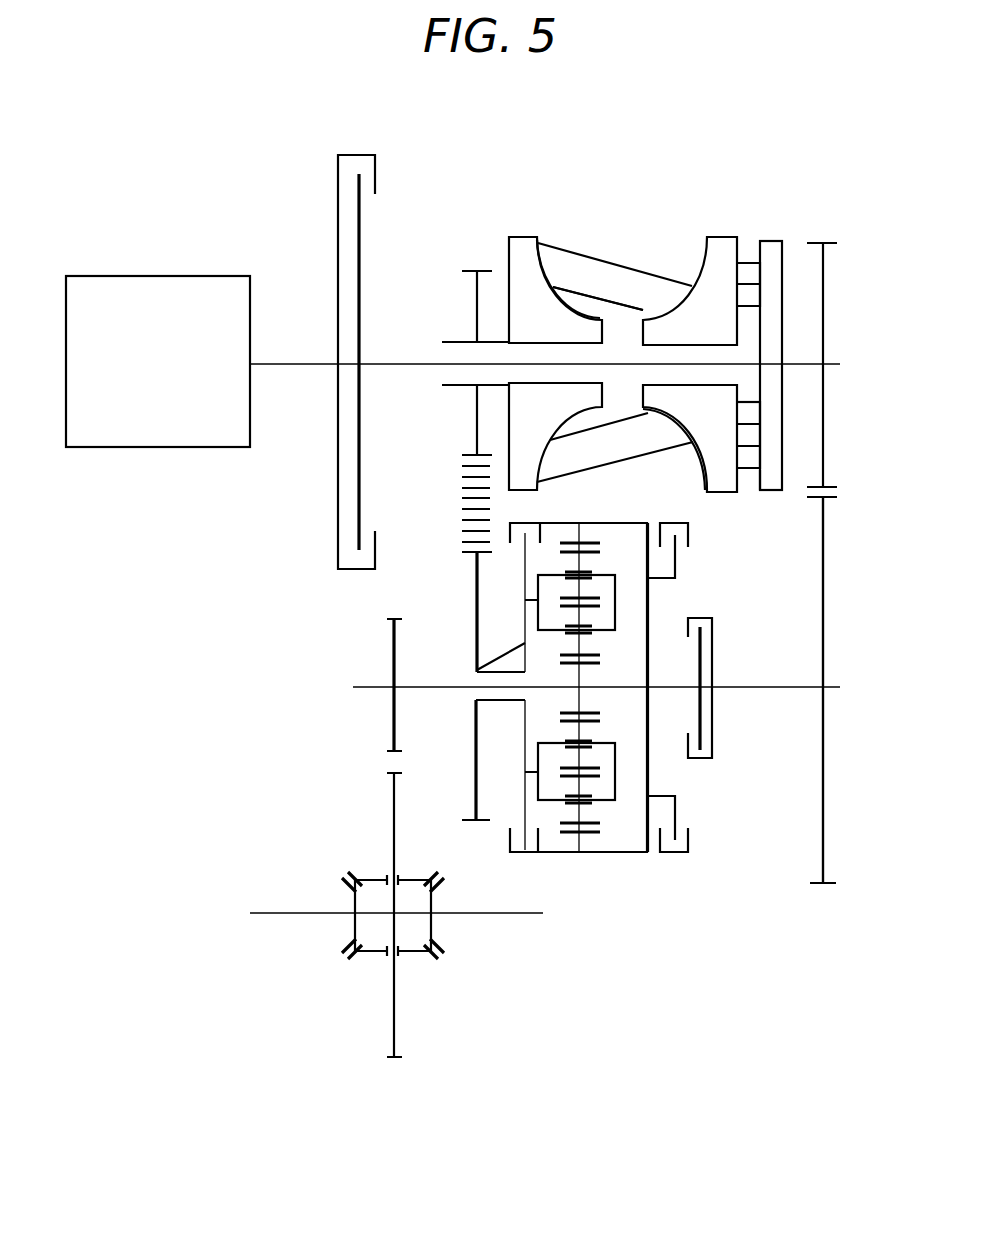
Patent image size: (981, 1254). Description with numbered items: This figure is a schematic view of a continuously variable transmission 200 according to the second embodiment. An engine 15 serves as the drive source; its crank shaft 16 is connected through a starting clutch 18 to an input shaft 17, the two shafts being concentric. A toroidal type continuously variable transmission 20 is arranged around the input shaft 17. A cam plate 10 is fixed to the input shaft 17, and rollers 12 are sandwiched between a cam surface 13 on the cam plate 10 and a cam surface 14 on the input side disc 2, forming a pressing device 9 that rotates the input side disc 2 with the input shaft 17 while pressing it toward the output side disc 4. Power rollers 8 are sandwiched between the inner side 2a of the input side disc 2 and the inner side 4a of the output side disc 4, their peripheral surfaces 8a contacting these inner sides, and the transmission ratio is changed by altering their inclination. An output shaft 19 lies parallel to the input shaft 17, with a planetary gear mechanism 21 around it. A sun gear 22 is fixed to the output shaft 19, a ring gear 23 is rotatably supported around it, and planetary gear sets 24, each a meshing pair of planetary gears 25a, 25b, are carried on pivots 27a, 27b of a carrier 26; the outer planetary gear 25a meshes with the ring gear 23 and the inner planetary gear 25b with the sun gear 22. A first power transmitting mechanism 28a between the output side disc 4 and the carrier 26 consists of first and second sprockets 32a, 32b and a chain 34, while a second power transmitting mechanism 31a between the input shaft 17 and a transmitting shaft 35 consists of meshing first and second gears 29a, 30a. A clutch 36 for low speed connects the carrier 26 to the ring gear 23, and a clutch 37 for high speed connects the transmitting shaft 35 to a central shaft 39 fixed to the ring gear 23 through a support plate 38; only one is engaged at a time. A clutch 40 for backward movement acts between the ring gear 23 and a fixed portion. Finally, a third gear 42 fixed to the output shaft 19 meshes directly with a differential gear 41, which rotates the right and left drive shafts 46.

The input side disc 2 is at (733, 240).
The inner side of the input side disc 2a is at (693, 480).
The output side disc 4 is at (530, 240).
The inner side of the output side disc 4a is at (552, 277).
The power rollers 8 is at (621, 273).
The peripheral surfaces of the power rollers 8a is at (628, 430).
The pressing device 9 is at (752, 297).
The cam plate 10 is at (773, 248).
The rollers 12 is at (753, 273).
The cam surface 13 is at (761, 482).
The cam surface 14 is at (738, 403).
The engine 15 is at (193, 276).
The crank shaft 16 is at (305, 362).
The input shaft 17 is at (393, 362).
The starting clutch 18 is at (372, 155).
The output shaft 19 is at (430, 688).
The toroidal type continuously variable transmission 20 is at (687, 215).
The planetary gear mechanism 21 is at (618, 865).
The sun gear 22 is at (650, 683).
The ring gear 23 is at (647, 852).
The planetary gear sets 24 is at (616, 587).
The planetary gear 25a is at (616, 598).
The planetary gear 25b is at (582, 618).
The carrier 26 is at (477, 672).
The pivot 27a is at (558, 572).
The pivot 27b is at (553, 630).
The first power transmitting mechanism 28a is at (480, 583).
The first gear 29a is at (823, 408).
The second gear 30a is at (822, 630).
The second power transmitting mechanism 31a is at (822, 547).
The first sprocket 32a is at (477, 435).
The second sprocket 32b is at (477, 632).
The chain 34 is at (458, 492).
The transmitting shaft 35 is at (822, 715).
The clutch for low speed 36 is at (528, 852).
The clutch for high speed 37 is at (712, 730).
The support plate 38 is at (648, 622).
The central shaft 39 is at (668, 690).
The clutch for backward movement 40 is at (673, 852).
The differential gear 41 is at (394, 969).
The third gear 42 is at (390, 704).
The drive shafts 46 is at (331, 913).
The continuously variable transmission 200 is at (300, 617).